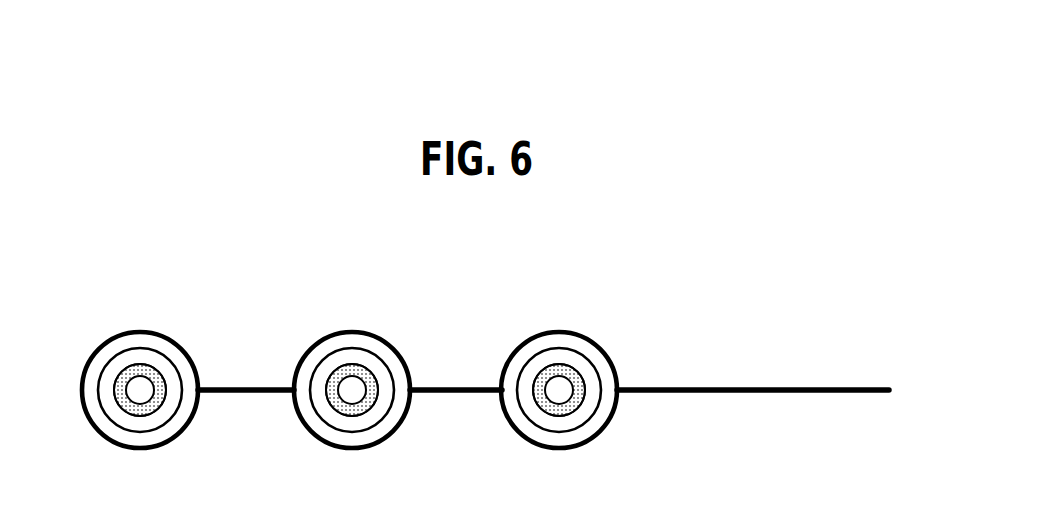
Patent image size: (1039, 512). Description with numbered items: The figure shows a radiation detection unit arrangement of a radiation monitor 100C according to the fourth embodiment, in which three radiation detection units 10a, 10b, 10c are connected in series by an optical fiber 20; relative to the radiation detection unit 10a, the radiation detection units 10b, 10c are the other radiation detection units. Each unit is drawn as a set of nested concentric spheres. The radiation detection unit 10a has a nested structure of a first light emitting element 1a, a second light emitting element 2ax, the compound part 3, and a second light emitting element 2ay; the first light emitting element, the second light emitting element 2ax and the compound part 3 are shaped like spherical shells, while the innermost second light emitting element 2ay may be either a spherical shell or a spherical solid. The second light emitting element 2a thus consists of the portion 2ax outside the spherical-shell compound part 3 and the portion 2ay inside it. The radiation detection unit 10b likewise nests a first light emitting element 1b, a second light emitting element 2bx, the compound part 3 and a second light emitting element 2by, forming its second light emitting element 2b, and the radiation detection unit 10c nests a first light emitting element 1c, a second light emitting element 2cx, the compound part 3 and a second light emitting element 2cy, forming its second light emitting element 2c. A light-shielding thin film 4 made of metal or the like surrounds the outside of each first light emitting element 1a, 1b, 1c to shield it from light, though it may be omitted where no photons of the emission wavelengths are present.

The radiation monitor 100C is at (671, 203).
The radiation detection unit 10a is at (204, 283).
The radiation detection unit 10b is at (416, 283).
The radiation detection unit 10c is at (623, 283).
The first light emitting element 1a is at (105, 352).
The first light emitting element 1b is at (317, 352).
The first light emitting element 1c is at (524, 352).
The second light emitting element 2a is at (106, 430).
The second light emitting element 2ax is at (105, 378).
The second light emitting element 2ay is at (140, 393).
The second light emitting element 2b is at (319, 430).
The second light emitting element 2bx is at (317, 378).
The second light emitting element 2by is at (352, 393).
The second light emitting element 2c is at (526, 430).
The second light emitting element 2cx is at (524, 378).
The second light emitting element 2cy is at (559, 393).
The compound part 3 is at (138, 362).
The light-shielding thin film 4 is at (183, 345).
The optical fiber 20 is at (244, 387).